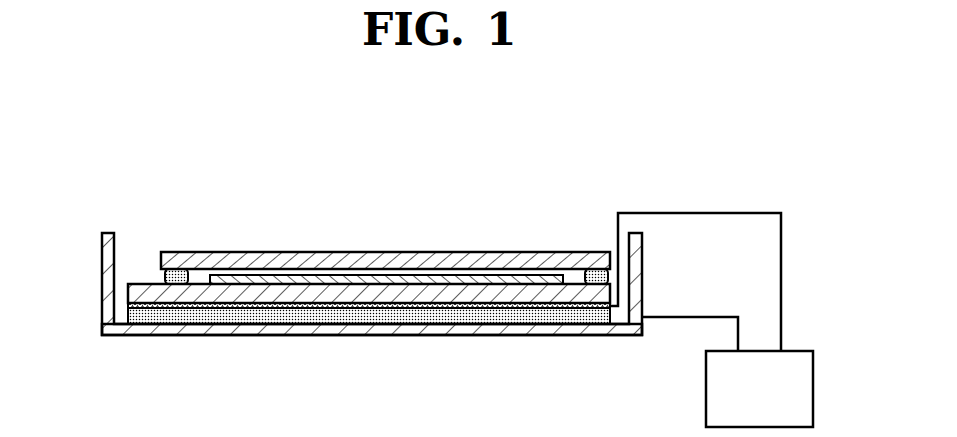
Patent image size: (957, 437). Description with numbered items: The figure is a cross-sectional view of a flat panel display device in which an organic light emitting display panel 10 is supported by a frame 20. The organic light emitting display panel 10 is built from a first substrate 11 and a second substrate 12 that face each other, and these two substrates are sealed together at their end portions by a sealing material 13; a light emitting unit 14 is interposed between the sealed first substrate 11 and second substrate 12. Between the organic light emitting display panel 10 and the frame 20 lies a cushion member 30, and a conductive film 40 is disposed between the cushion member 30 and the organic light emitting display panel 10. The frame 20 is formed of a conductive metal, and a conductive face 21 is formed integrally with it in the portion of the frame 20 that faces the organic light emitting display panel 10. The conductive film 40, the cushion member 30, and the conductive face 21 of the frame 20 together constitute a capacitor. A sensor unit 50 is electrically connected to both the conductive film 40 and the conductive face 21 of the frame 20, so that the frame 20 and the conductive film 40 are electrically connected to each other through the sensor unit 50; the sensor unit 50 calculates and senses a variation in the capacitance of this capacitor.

The organic light emitting display panel 10 is at (369, 227).
The first substrate 11 is at (255, 287).
The second substrate 12 is at (317, 262).
The sealing material 13 is at (175, 270).
The light emitting unit 14 is at (374, 282).
The frame 20 is at (108, 275).
The conductive face 21 is at (209, 328).
The cushion member 30 is at (269, 309).
The conductive film 40 is at (323, 316).
The sensor unit 50 is at (803, 390).